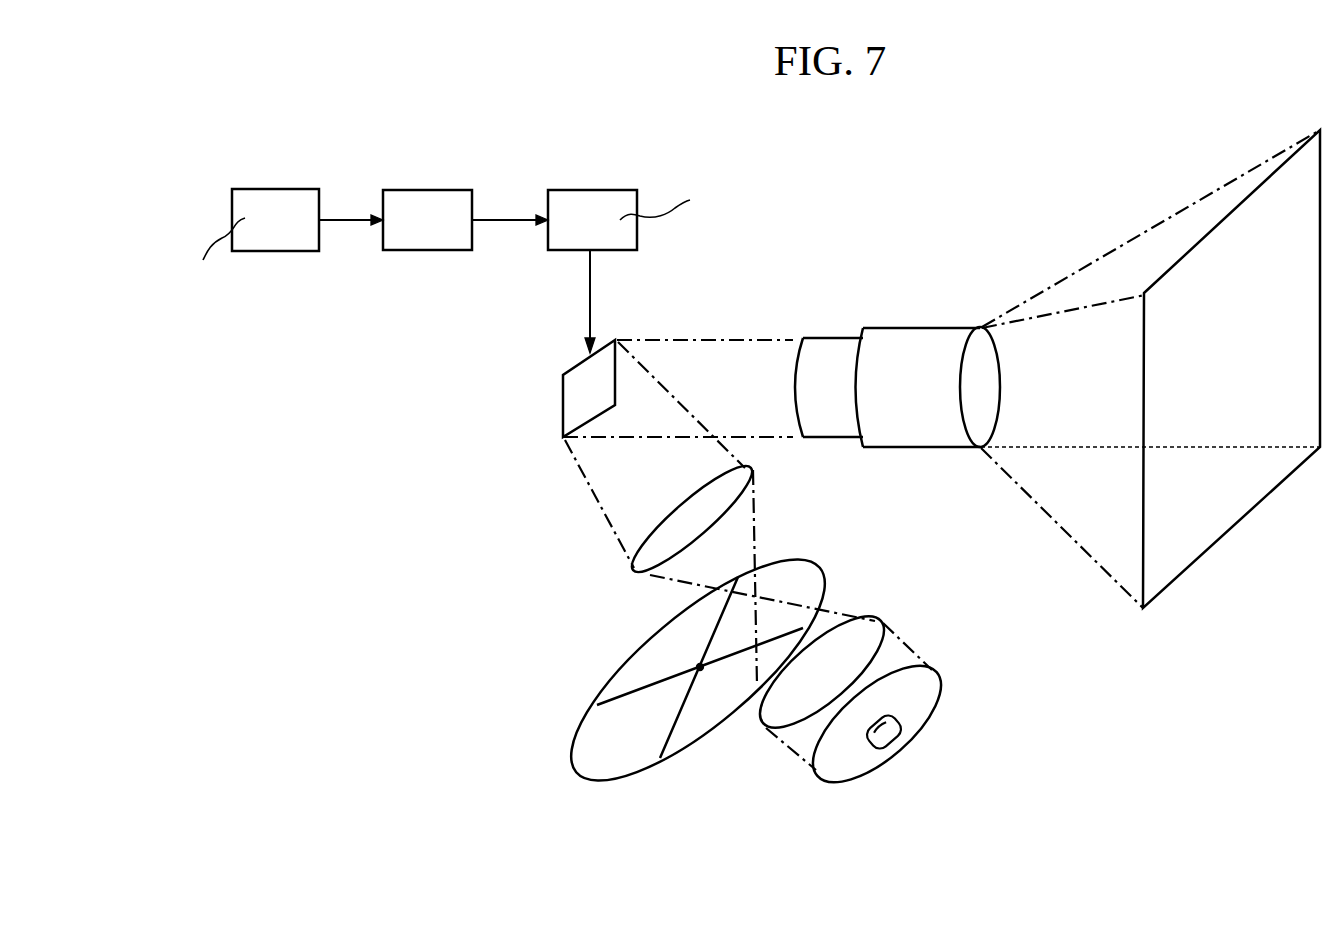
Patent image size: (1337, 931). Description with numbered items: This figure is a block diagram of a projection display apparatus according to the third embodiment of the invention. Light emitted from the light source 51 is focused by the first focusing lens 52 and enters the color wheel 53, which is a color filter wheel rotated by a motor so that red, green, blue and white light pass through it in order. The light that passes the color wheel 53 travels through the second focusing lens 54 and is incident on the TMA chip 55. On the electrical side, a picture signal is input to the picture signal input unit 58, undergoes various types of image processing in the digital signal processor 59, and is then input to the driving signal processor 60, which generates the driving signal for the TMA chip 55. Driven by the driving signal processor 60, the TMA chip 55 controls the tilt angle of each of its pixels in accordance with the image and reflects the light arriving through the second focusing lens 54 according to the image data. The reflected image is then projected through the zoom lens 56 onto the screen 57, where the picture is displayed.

The light source 51 is at (818, 778).
The first focusing lens 52 is at (763, 722).
The color wheel 53 is at (600, 695).
The second focusing lens 54 is at (640, 573).
The TMA chip 55 is at (617, 340).
The zoom lens 56 is at (905, 328).
The screen 57 is at (1194, 562).
The picture signal input unit 58 is at (277, 189).
The digital signal processor (DSP) 59 is at (432, 189).
The driving signal processor 60 is at (590, 189).